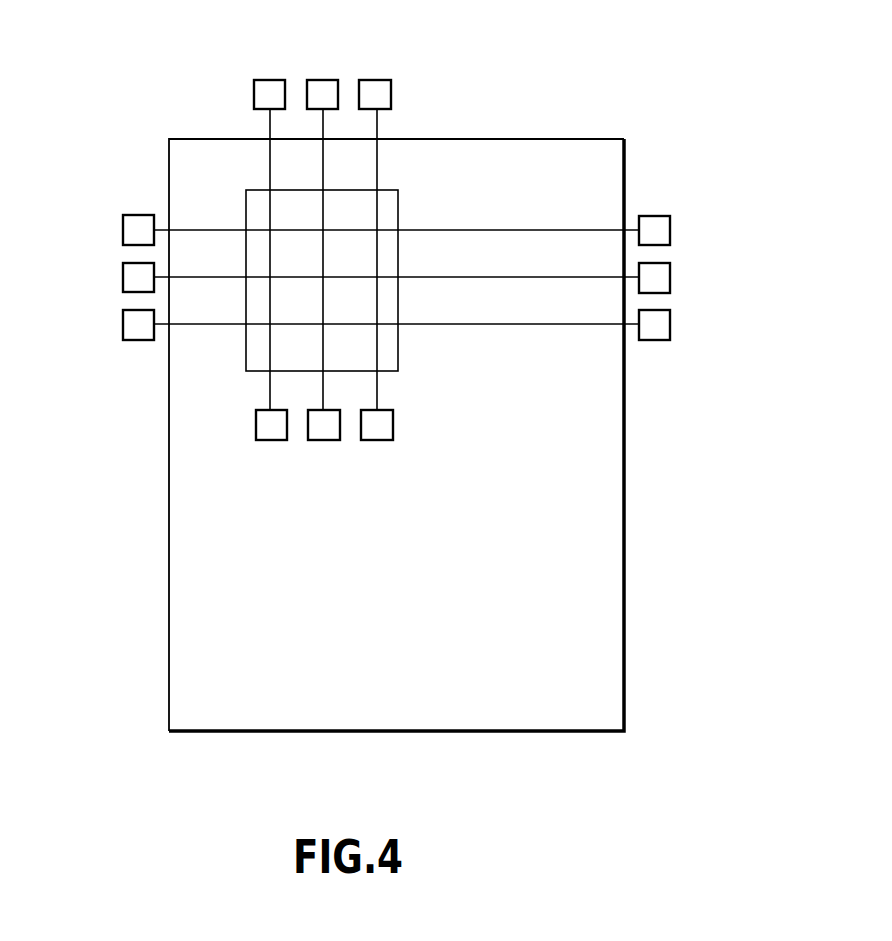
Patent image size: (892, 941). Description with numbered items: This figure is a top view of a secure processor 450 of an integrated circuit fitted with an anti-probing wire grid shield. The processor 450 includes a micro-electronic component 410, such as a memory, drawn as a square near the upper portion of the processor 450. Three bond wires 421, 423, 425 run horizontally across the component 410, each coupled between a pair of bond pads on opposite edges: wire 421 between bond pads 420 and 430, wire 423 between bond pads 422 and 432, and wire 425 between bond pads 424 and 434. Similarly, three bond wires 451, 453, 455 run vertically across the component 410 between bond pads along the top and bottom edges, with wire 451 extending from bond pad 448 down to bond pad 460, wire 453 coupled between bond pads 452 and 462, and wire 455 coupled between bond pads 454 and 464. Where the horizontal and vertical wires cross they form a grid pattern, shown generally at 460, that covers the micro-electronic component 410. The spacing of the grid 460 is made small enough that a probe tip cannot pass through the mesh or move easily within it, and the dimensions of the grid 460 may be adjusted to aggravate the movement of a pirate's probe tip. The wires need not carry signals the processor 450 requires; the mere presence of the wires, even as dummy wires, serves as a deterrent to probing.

The micro-electronic component 410 is at (398, 190).
The bond pad 420 is at (123, 230).
The bond wire 421 is at (490, 230).
The bond pad 422 is at (123, 277).
The bond wire 423 is at (512, 277).
The bond pad 424 is at (123, 325).
The bond wire 425 is at (495, 324).
The bond pad 430 is at (670, 238).
The bond pad 432 is at (670, 273).
The bond pad 434 is at (670, 338).
The top bond pad 448 is at (267, 80).
The processor 450 is at (626, 487).
The bond wire 451 is at (268, 182).
The bond pad 452 is at (322, 80).
The bond wire 453 is at (322, 182).
The bond pad 454 is at (372, 80).
The vertical conductive line 455 is at (378, 176).
The grid pattern 460 is at (272, 440).
The bond pad 462 is at (320, 440).
The bond pad 464 is at (375, 440).